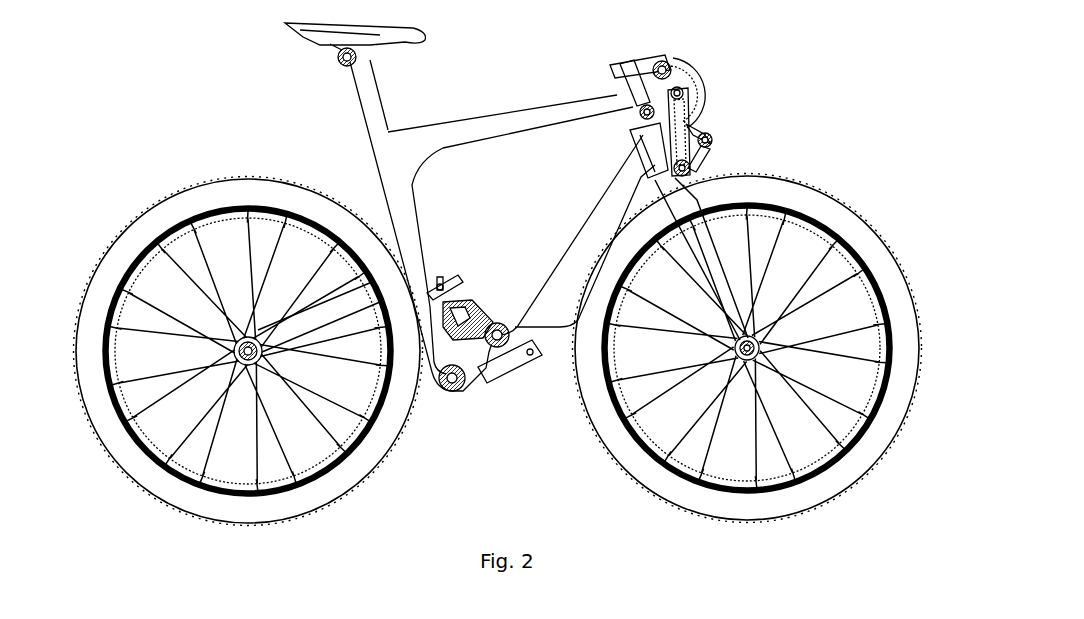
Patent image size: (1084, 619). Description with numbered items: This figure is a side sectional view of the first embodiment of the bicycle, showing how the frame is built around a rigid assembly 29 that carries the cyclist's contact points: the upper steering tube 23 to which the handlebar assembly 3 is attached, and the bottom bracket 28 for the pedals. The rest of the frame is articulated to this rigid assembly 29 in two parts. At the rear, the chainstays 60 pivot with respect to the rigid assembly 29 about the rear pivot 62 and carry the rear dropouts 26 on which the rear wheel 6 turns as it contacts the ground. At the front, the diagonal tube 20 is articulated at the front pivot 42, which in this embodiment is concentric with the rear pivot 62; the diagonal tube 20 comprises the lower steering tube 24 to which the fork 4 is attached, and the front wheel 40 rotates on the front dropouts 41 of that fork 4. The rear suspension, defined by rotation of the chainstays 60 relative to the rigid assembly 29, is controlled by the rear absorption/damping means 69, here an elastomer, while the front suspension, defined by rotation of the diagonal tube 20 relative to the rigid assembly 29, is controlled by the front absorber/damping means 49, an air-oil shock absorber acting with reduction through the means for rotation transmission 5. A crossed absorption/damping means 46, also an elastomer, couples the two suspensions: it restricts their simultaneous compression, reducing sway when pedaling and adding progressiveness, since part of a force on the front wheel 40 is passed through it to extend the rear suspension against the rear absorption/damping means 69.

The handlebar assembly 3 is at (693, 56).
The fork 4 is at (703, 250).
The means for rotation transmission 5 is at (720, 144).
The rear wheel 6 is at (121, 473).
The diagonal tube 20 is at (573, 228).
The upper steering tube 23 is at (620, 100).
The lower steering tube 24 is at (640, 150).
The rear dropouts 26 is at (248, 347).
The bottom bracket 28 is at (452, 402).
The rigid assembly 29 is at (466, 150).
The front wheel 40 is at (884, 492).
The front dropouts 41 is at (762, 344).
The front pivot 42 is at (492, 367).
The crossed absorption/damping means 46 is at (487, 294).
The front absorber/damping means 49 is at (677, 132).
The chainstays 60 is at (362, 307).
The rear pivot 62 is at (500, 343).
The rear absorption/damping means 69 is at (455, 278).